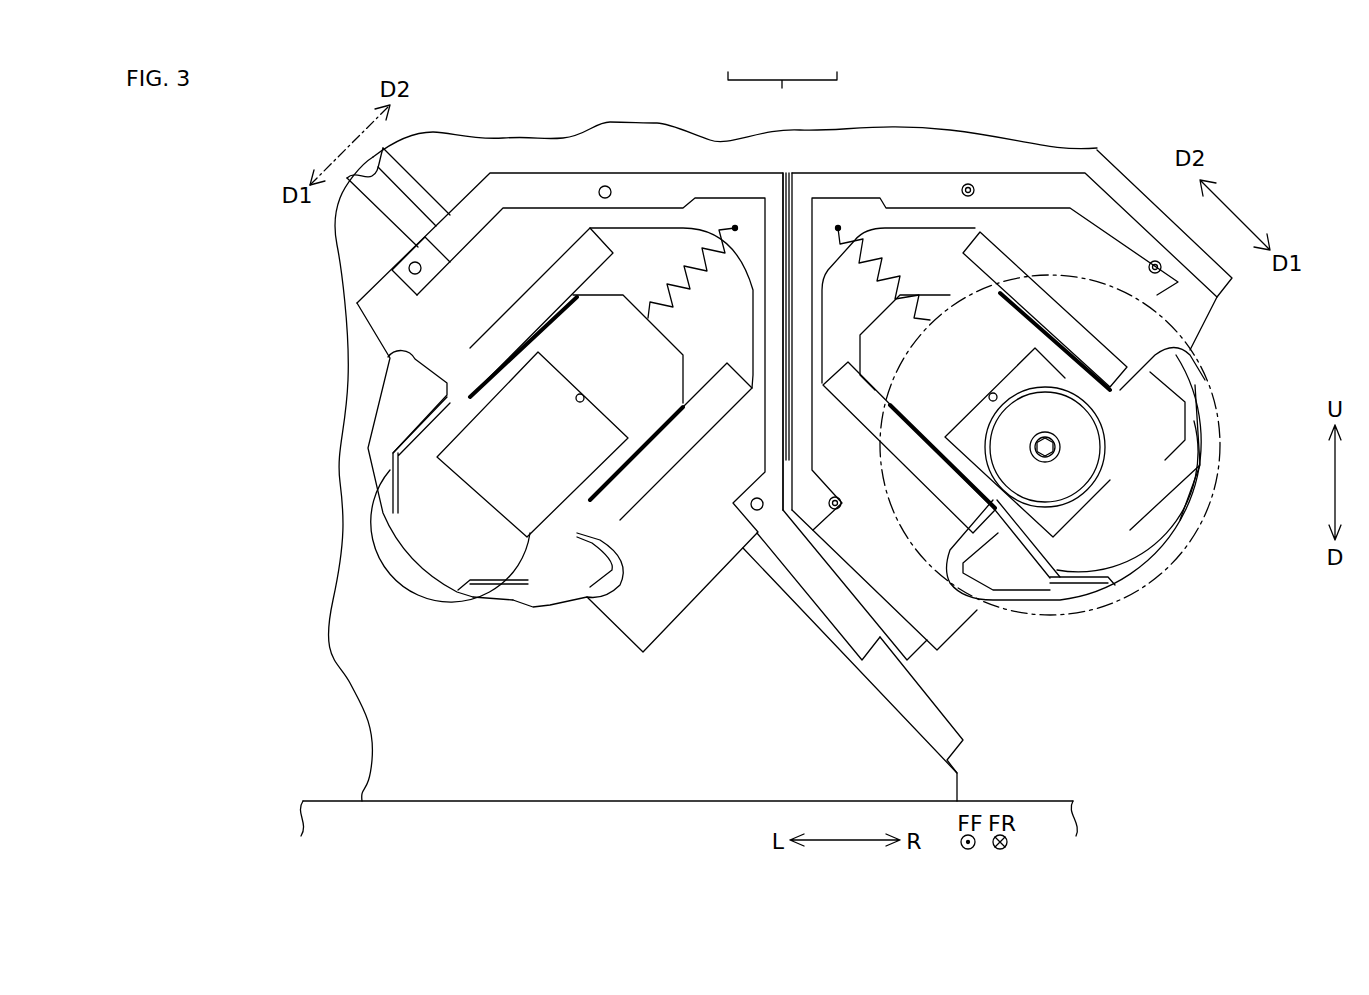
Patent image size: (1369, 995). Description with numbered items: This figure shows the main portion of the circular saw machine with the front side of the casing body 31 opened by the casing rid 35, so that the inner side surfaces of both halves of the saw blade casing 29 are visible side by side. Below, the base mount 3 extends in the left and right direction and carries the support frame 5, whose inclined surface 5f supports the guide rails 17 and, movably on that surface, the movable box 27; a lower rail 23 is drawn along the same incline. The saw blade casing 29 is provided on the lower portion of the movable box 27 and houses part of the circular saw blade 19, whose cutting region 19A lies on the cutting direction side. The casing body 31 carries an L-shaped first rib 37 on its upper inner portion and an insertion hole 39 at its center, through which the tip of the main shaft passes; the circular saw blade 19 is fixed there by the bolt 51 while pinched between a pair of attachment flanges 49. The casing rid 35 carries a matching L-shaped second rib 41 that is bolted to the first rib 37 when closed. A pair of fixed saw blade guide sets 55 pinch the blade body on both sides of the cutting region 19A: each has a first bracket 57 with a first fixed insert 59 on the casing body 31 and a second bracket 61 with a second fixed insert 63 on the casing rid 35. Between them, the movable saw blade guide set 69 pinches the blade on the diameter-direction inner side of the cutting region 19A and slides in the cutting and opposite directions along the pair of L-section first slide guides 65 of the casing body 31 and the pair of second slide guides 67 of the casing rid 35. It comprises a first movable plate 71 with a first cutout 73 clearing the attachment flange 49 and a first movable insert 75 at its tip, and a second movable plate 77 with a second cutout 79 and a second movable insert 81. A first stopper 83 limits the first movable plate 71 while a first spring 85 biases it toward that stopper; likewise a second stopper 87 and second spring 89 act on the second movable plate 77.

The base mount 3 is at (1013, 801).
The support frame 5 is at (596, 793).
The inclined surface 5f is at (877, 689).
The guide rail 17 is at (930, 698).
The circular saw blade 19 is at (1210, 397).
The cutting region 19A is at (1158, 570).
The lower rail 23 is at (805, 605).
The movable box 27 is at (1105, 148).
The saw blade casing 29 is at (782, 69).
The casing body 31 is at (836, 173).
The casing rid 35 is at (730, 173).
The first rib 37 is at (1012, 173).
The insertion hole 39 is at (1048, 395).
The second rib 41 is at (510, 173).
The attachment flange 49 is at (1005, 462).
The bolt 51 is at (1058, 460).
The fixed saw blade guide set 55 is at (360, 444).
The first bracket 57 is at (1198, 436).
The first fixed insert 59 is at (1195, 495).
The second bracket 61 is at (388, 402).
The second fixed insert 63 is at (383, 497).
The first slide guide 65 is at (993, 258).
The second slide guide 67 is at (520, 305).
The movable saw blade guide set 69 is at (1188, 540).
The first movable plate 71 is at (905, 360).
The first cutout 73 is at (965, 433).
The first movable insert 75 is at (1138, 580).
The second movable plate 77 is at (670, 345).
The second cutout 79 is at (598, 470).
The second movable insert 81 is at (425, 572).
The first stopper 83 is at (993, 393).
The first spring 85 is at (880, 272).
The second stopper 87 is at (585, 398).
The second spring 89 is at (700, 272).